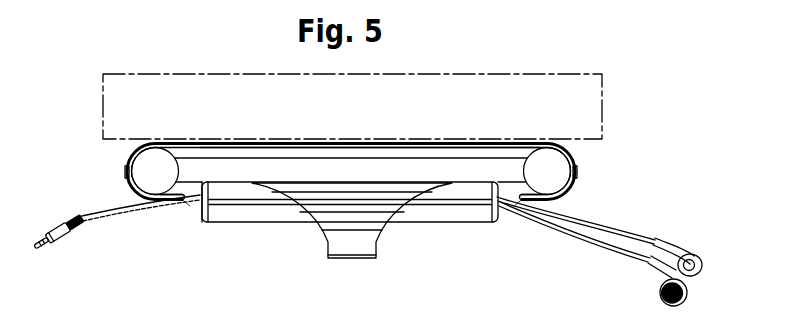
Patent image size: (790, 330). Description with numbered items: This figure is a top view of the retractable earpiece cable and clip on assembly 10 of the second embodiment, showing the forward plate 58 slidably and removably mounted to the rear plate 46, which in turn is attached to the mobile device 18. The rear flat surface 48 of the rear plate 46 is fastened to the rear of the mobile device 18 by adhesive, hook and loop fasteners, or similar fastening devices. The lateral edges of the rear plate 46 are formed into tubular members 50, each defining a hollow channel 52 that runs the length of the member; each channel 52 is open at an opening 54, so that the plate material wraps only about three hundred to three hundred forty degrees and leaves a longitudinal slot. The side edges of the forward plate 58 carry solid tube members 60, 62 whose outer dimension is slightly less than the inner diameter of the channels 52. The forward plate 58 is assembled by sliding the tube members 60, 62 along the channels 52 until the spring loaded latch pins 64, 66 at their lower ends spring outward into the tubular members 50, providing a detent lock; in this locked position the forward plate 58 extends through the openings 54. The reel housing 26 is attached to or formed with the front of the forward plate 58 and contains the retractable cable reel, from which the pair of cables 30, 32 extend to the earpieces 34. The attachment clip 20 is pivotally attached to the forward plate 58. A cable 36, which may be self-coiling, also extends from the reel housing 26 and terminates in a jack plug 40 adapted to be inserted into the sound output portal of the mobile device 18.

The retractable earpiece cable and clip on assembly 10 is at (661, 89).
The mobile device 18 is at (603, 103).
The attachment clip 20 is at (322, 240).
The reel housing 26 is at (265, 222).
The cable 30 is at (634, 221).
The cable 32 is at (603, 246).
The earpieces 34 is at (702, 255).
The cable 36 is at (106, 219).
The jack plug 40 is at (70, 233).
The rear plate 46 is at (414, 148).
The rear flat surface 48 is at (215, 146).
The tubular members 50 is at (133, 156).
The hollow channel 52 is at (137, 199).
The opening 54 is at (187, 204).
The forward plate 58 is at (222, 177).
The tube member 60 is at (156, 164).
The tube member 62 is at (547, 158).
The spring loaded latch pin 64 is at (128, 172).
The spring loaded latch pin 66 is at (578, 172).